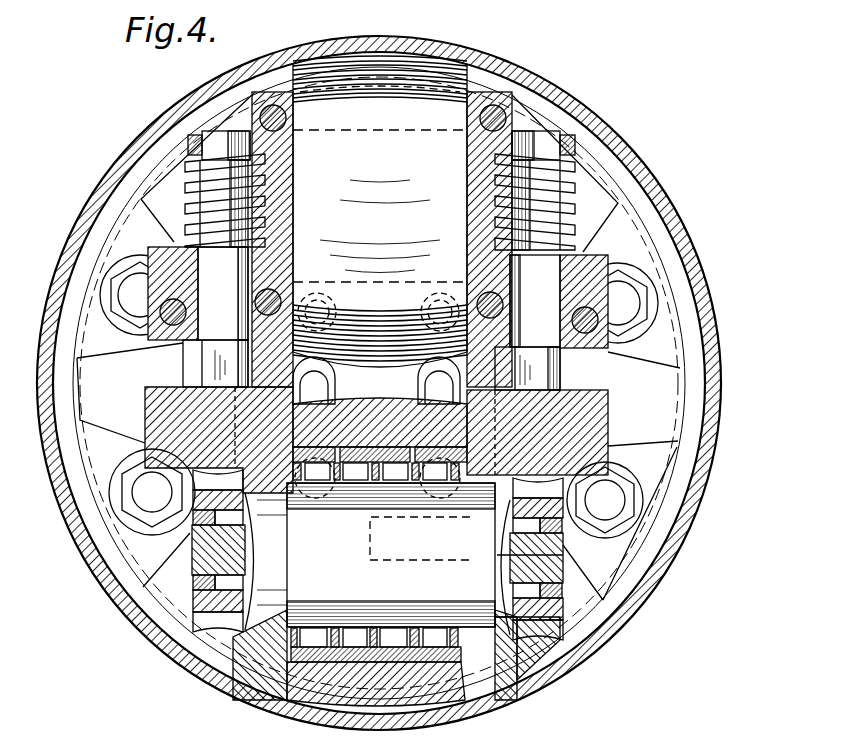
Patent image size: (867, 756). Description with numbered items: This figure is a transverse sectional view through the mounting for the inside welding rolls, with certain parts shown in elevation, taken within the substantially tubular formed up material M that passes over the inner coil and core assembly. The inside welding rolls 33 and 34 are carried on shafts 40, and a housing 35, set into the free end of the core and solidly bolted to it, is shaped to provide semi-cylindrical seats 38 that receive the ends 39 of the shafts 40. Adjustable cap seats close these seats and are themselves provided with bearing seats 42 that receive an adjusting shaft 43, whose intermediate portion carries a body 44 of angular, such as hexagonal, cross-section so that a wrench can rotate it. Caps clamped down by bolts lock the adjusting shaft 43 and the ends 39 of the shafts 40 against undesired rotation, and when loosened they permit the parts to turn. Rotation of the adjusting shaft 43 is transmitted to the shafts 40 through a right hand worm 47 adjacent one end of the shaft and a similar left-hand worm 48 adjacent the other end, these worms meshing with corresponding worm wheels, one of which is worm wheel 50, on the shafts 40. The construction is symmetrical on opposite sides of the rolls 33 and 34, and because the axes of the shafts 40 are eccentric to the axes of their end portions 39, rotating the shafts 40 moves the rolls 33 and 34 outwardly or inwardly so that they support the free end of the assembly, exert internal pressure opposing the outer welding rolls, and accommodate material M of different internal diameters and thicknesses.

The tubular formed up material M is at (605, 122).
The inside welding roll 33 is at (405, 103).
The inside welding roll 34 is at (402, 690).
The housing 35 is at (606, 420).
The semi-cylindrical seat 38 is at (237, 630).
The shaft end 39 is at (377, 555).
The shaft 40 is at (391, 562).
The bearing seat 42 is at (203, 262).
The adjusting shaft 43 is at (378, 239).
The body 44 is at (188, 362).
The right hand worm 47 is at (186, 197).
The left-hand worm 48 is at (570, 217).
The worm wheel 50 is at (215, 617).